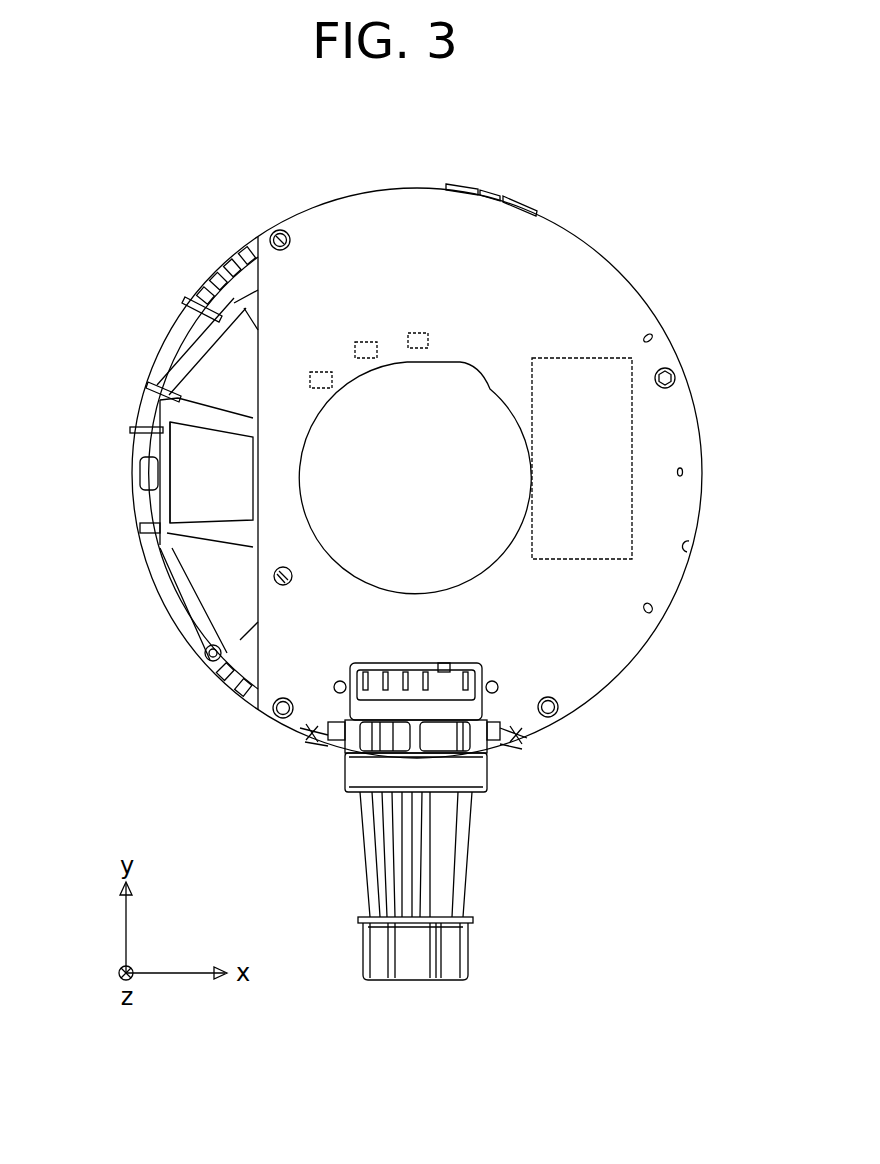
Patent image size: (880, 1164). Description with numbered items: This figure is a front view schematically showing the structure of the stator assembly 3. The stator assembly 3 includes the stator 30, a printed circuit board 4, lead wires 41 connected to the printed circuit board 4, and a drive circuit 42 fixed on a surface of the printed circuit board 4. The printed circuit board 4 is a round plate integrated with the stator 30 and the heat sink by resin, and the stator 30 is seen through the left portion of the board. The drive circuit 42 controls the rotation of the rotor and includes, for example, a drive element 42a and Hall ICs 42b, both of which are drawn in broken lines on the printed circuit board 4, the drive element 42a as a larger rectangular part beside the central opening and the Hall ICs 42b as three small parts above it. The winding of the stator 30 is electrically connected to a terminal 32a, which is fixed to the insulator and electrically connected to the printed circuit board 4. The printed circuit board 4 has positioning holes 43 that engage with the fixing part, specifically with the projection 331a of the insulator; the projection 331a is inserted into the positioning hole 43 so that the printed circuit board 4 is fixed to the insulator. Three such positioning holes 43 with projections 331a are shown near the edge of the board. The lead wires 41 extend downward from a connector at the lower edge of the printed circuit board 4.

The stator assembly 3 is at (146, 190).
The printed circuit board 4 is at (583, 270).
The stator 30 is at (165, 345).
The projection 331a is at (279, 231).
The positioning hole 43 is at (291, 239).
The drive circuit 42 is at (358, 268).
The drive element 42a is at (550, 357).
The Hall ICs 42b is at (417, 332).
The terminal 32a is at (652, 614).
The lead wires 41 is at (488, 865).